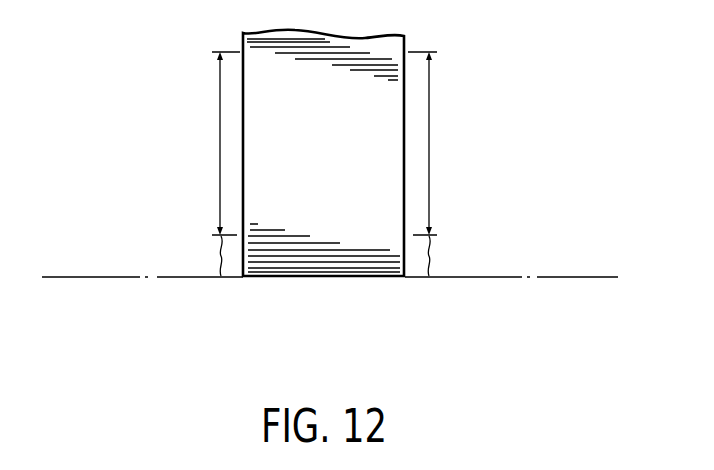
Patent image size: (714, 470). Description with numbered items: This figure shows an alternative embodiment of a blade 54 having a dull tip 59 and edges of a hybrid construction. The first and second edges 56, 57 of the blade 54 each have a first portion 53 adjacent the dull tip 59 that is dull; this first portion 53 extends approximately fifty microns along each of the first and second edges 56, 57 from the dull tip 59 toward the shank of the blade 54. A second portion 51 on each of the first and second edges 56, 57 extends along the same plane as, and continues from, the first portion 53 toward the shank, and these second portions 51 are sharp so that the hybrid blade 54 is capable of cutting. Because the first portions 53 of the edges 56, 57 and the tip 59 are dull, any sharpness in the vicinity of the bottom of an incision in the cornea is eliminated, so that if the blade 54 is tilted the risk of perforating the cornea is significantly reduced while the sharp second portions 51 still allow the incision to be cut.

The second portion 51 is at (220, 147).
The first portion 53 is at (219, 256).
The blade 54 is at (527, 93).
The first edge 56 is at (178, 97).
The second edge 57 is at (458, 93).
The dull tip 59 is at (337, 276).